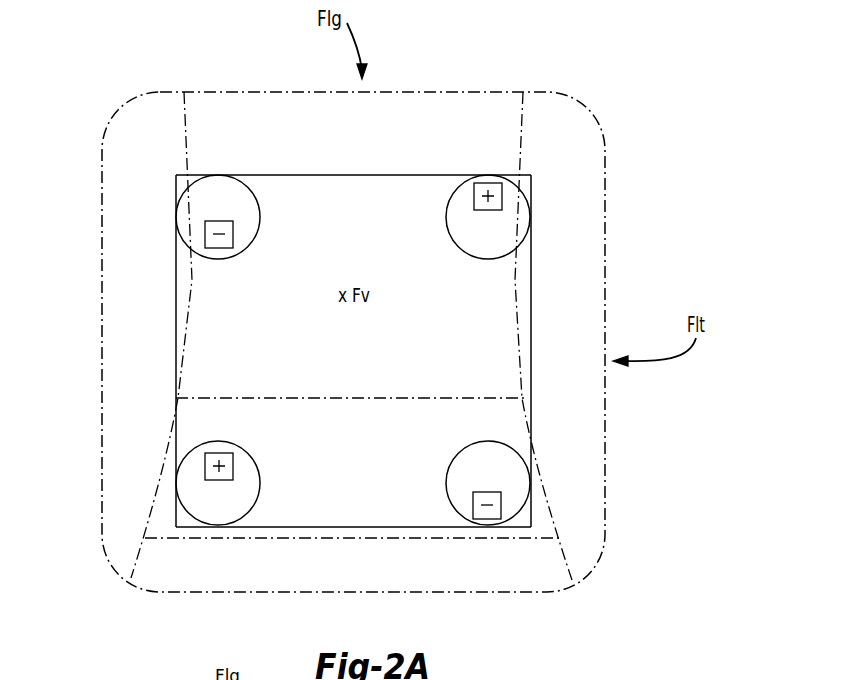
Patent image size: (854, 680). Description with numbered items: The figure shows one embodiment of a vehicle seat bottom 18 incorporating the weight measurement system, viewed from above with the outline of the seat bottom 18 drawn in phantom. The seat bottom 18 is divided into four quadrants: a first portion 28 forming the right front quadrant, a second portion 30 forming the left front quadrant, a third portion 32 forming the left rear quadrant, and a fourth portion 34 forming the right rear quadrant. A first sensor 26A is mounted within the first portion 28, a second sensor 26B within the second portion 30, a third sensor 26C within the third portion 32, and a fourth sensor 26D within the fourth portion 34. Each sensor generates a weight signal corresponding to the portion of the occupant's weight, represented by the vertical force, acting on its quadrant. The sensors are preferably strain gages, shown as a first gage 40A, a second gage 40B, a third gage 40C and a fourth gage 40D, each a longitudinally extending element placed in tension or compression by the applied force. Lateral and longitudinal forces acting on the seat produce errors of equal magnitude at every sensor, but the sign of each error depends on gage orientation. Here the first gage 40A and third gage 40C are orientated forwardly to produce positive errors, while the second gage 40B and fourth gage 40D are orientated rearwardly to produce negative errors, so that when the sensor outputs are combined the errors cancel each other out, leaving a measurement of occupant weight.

The seat bottom 18 is at (470, 90).
The first sensor 26A is at (518, 190).
The second sensor 26B is at (192, 192).
The third sensor 26C is at (200, 524).
The fourth sensor 26D is at (522, 513).
The first portion 28 is at (520, 262).
The second portion 30 is at (185, 263).
The third portion 32 is at (190, 445).
The fourth portion 34 is at (517, 442).
The first gage 40A is at (474, 198).
The second gage 40B is at (233, 238).
The third gage 40C is at (233, 465).
The fourth gage 40D is at (473, 508).